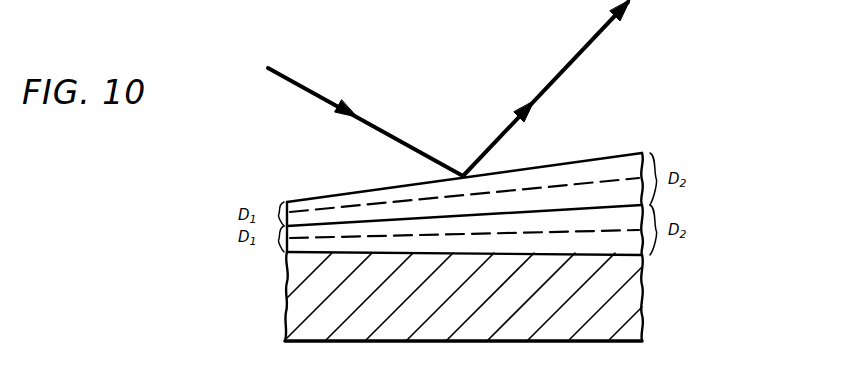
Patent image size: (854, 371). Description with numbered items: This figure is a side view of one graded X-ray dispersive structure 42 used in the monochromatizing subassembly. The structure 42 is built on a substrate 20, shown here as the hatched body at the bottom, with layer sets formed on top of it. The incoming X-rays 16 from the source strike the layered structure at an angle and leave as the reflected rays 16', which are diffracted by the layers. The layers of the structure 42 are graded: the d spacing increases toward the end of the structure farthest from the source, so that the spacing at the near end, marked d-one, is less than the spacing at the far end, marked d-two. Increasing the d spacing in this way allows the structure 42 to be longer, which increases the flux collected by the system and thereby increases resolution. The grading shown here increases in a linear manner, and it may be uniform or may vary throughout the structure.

The X-rays 16 is at (365, 119).
The reflected light beam 16' is at (546, 88).
The graded X-ray dispersive structure 42 is at (698, 183).
The substrate 20 is at (310, 295).